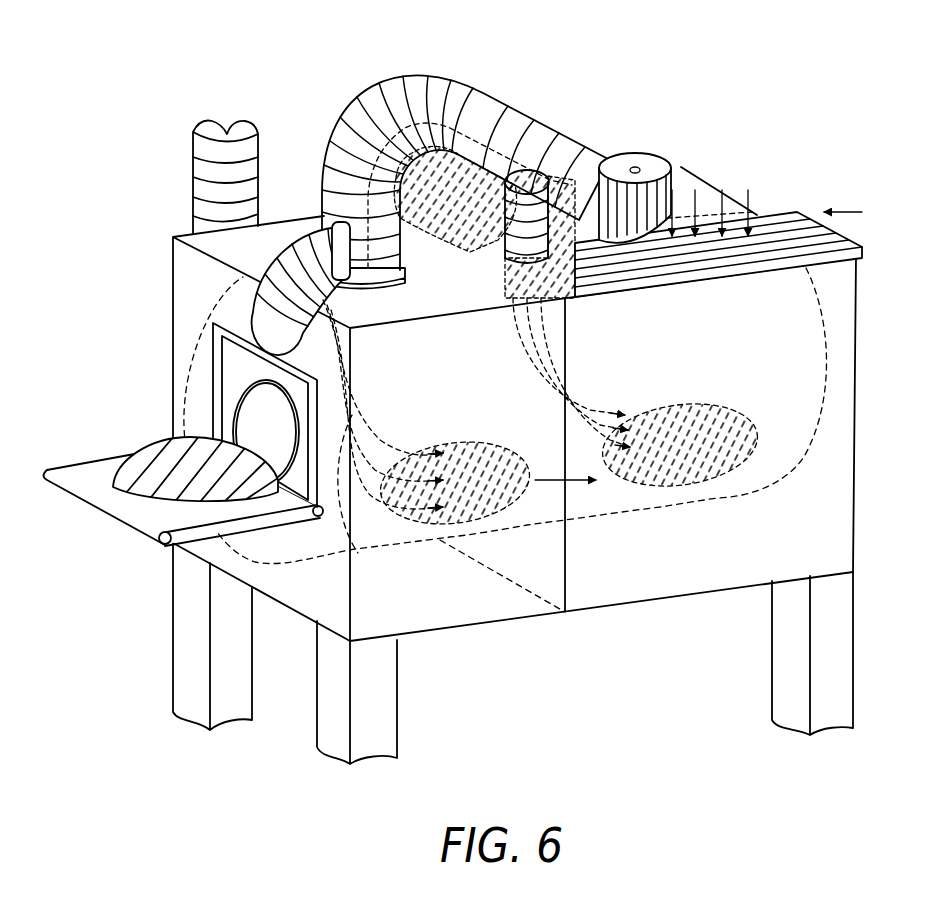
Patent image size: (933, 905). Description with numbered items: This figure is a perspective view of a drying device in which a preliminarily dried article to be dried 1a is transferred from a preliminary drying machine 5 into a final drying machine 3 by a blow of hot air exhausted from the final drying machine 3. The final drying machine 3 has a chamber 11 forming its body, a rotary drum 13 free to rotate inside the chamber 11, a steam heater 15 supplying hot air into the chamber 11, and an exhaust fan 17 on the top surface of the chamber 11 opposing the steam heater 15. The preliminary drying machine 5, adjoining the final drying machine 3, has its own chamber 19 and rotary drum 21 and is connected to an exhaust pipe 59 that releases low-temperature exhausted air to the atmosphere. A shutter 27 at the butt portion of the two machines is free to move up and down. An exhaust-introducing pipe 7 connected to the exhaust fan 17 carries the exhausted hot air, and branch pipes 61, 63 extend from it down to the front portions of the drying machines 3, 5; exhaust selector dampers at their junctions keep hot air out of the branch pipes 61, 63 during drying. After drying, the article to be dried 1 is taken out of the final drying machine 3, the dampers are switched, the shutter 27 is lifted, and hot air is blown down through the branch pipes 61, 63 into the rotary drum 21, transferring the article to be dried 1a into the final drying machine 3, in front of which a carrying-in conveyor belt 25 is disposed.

The article to be dried 1 is at (151, 448).
The preliminarily dried article to be dried 1a is at (459, 435).
The final drying machine 3 is at (707, 615).
The preliminary drying machine 5 is at (490, 640).
The exhaust-introducing pipe 7 is at (406, 100).
The chamber 11 is at (637, 603).
The rotary drum 13 is at (717, 500).
The steam heater 15 is at (800, 212).
The exhaust fan 17 is at (653, 165).
The chamber 19 is at (443, 628).
The rotary drum 21 is at (372, 553).
The carrying-in conveyor belt 25 is at (110, 508).
The shutter 27 is at (445, 110).
The exhaust pipe 59 is at (193, 192).
The branch pipe 61 is at (305, 230).
The branch pipe 63 is at (497, 222).